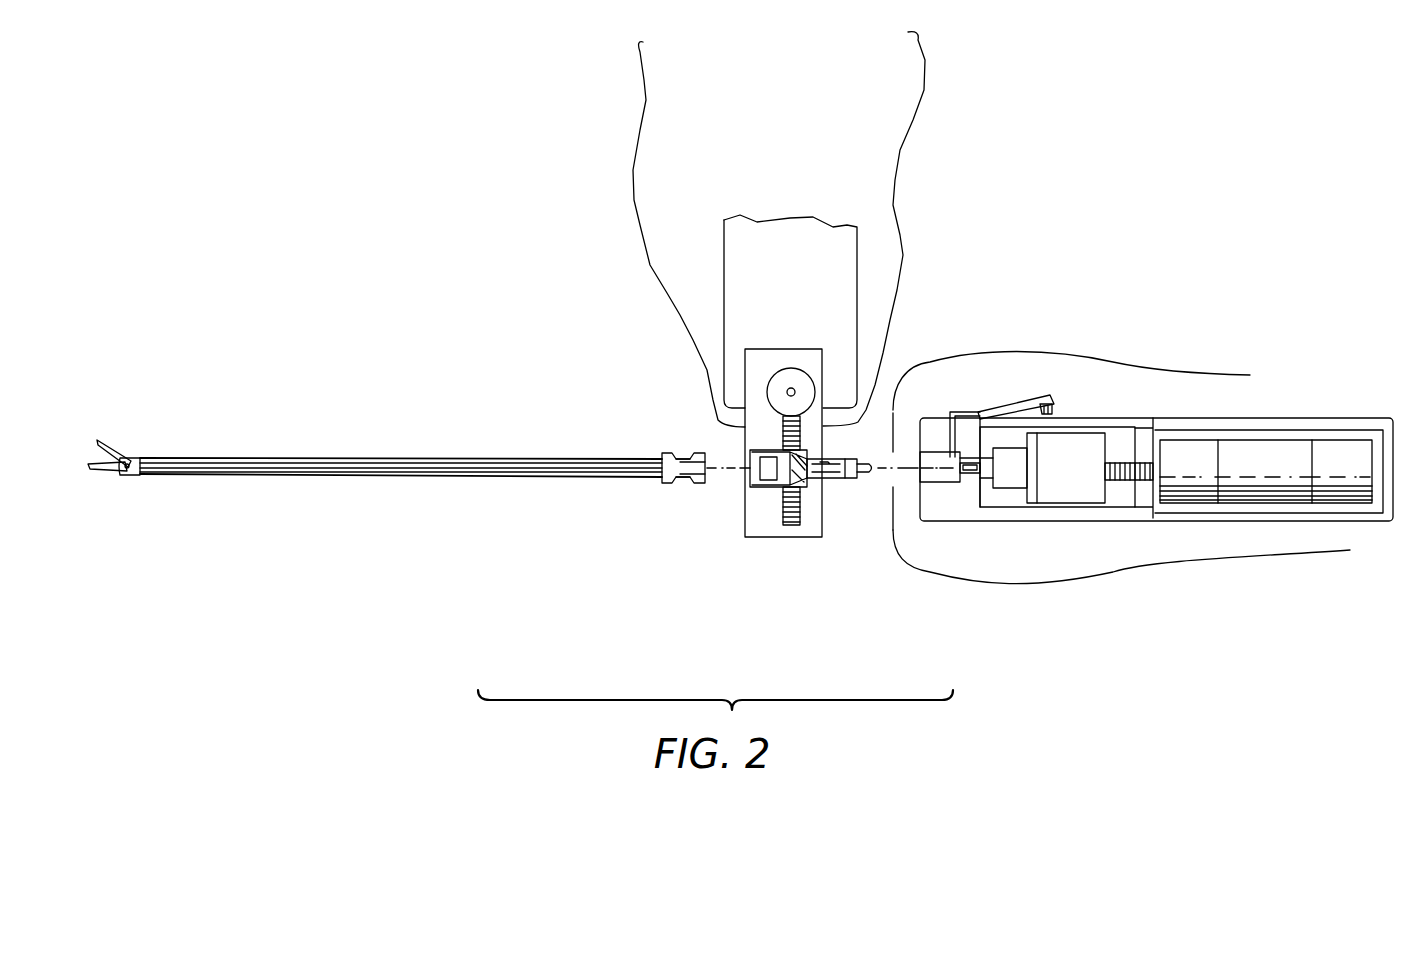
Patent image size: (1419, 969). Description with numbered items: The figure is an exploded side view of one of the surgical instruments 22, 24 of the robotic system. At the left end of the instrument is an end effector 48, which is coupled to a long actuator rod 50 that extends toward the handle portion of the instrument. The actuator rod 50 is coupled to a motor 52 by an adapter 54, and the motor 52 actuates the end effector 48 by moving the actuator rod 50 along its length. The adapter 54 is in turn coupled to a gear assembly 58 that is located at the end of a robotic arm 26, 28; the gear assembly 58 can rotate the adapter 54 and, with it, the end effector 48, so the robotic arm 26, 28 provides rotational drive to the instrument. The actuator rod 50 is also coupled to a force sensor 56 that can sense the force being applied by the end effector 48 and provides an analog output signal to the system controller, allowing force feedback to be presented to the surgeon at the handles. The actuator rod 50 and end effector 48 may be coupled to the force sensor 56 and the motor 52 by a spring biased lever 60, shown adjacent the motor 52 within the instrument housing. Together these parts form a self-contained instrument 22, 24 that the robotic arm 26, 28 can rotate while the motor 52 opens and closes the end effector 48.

The surgical instrument 22 is at (1143, 402).
The surgical instrument 24 is at (1017, 298).
The robotic arm 26 is at (779, 229).
The robotic arm 28 is at (755, 247).
The end effector 48 is at (103, 475).
The actuator rod 50 is at (335, 463).
The motor 52 is at (1182, 472).
The adapter 54 is at (767, 480).
The force sensor 56 is at (1077, 447).
The gear assembly 58 is at (805, 382).
The spring biased lever 60 is at (1040, 397).